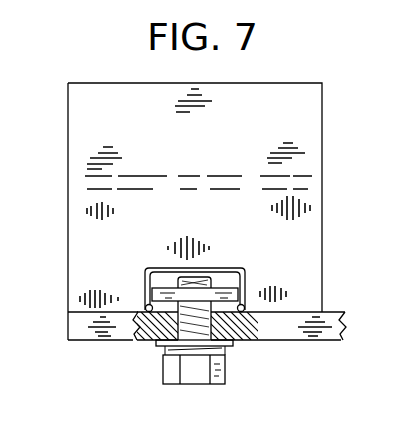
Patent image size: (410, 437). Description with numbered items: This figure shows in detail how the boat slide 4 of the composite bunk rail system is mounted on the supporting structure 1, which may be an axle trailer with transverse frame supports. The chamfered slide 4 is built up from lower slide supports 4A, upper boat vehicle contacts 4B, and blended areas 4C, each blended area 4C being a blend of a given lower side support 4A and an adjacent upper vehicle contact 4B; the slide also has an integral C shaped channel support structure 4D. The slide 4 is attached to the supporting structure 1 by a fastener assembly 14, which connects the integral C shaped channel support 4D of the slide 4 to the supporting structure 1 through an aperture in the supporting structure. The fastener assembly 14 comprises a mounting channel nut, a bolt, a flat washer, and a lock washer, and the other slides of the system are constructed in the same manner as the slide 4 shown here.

The supporting structure 1 is at (117, 337).
The chamfered slide 4 is at (113, 84).
The lower slide support 4A is at (72, 225).
The upper boat vehicle contact 4B is at (73, 143).
The blended area 4C is at (70, 183).
The integral C shaped channel support structure 4D is at (147, 271).
The fastener assembly 14 is at (158, 295).